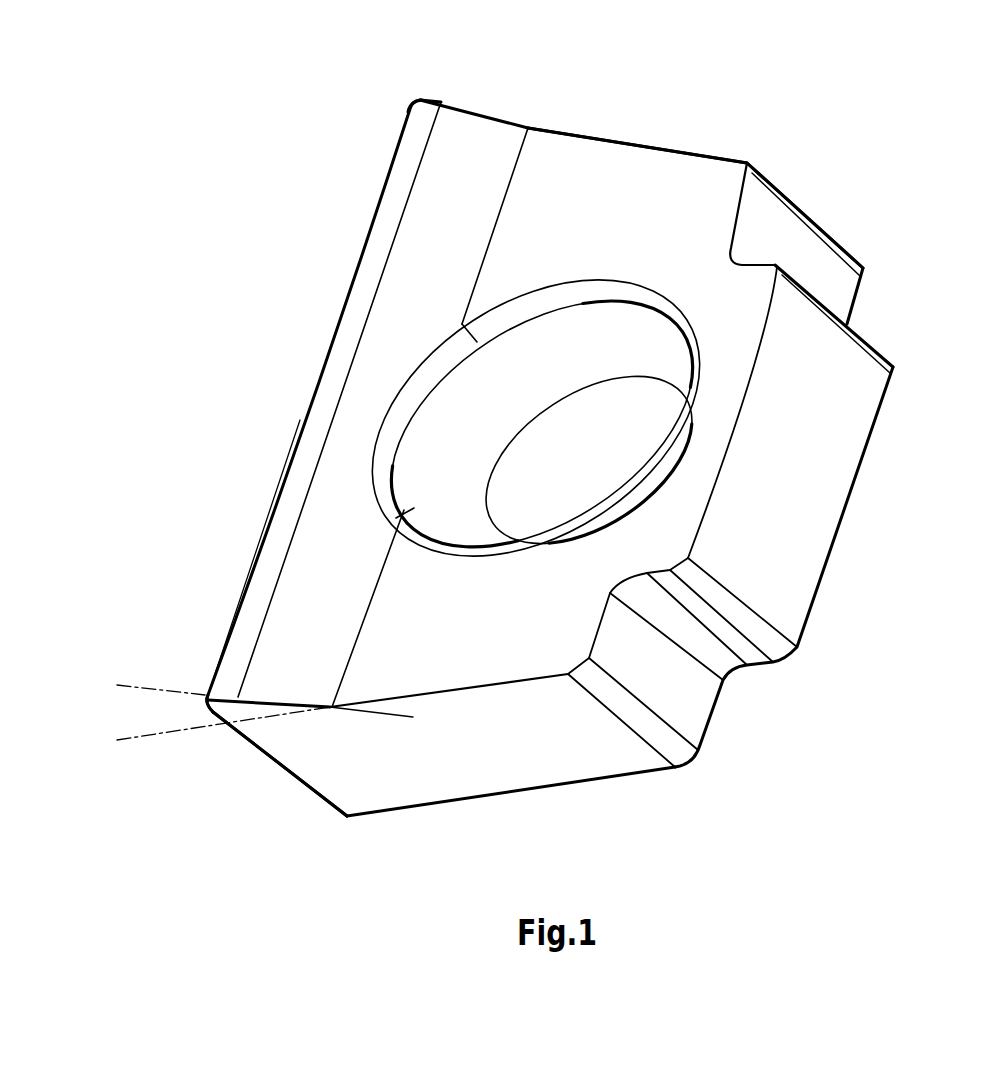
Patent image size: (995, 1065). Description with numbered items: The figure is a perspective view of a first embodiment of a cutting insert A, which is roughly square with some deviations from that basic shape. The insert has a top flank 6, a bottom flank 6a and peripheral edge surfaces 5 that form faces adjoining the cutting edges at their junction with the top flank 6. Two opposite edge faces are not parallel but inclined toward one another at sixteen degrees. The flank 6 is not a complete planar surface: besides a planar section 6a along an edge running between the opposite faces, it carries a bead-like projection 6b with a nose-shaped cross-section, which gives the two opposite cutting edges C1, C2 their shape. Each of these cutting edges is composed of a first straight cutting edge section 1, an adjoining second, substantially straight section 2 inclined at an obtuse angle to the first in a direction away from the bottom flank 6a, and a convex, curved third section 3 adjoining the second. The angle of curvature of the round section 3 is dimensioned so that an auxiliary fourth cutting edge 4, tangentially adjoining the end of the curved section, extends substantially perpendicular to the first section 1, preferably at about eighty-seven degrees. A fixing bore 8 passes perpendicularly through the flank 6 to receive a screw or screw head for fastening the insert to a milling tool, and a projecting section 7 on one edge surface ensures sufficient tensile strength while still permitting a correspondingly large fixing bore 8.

The first straight cutting edge section 1 is at (643, 143).
The second straight cutting edge section 2 is at (483, 110).
The curved third cutting edge section 3 is at (420, 98).
The auxiliary fourth cutting edge 4 is at (225, 730).
The peripheral edge surface 5 is at (428, 790).
The top flank 6 is at (697, 208).
The planar section of the flank 6a is at (592, 157).
The bead-like projection 6b is at (423, 230).
The projecting section 7 is at (762, 284).
The fixing bore 8 is at (642, 458).
The cutting insert A is at (290, 314).
The first cutting edge C1 is at (555, 700).
The second cutting edge C2 is at (563, 115).